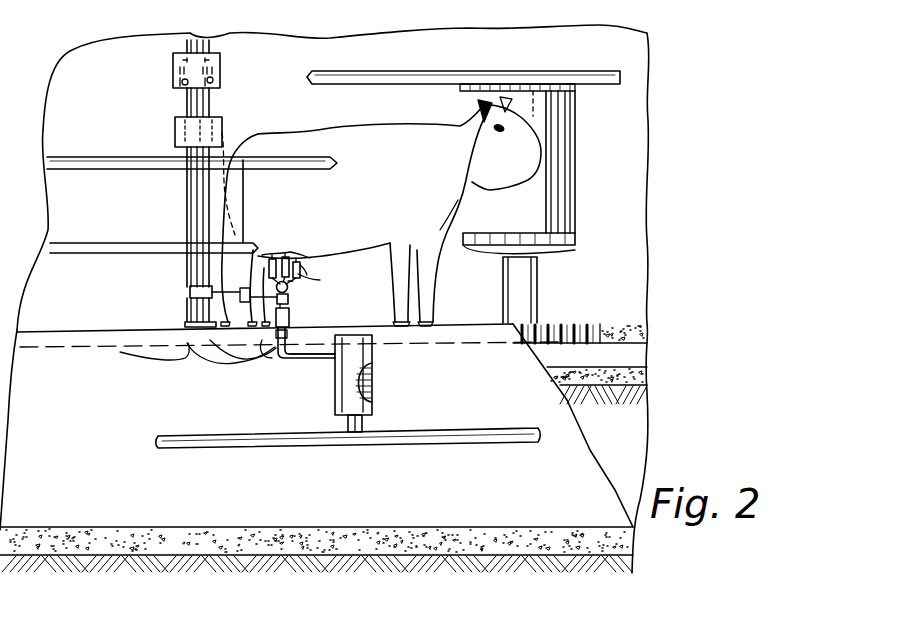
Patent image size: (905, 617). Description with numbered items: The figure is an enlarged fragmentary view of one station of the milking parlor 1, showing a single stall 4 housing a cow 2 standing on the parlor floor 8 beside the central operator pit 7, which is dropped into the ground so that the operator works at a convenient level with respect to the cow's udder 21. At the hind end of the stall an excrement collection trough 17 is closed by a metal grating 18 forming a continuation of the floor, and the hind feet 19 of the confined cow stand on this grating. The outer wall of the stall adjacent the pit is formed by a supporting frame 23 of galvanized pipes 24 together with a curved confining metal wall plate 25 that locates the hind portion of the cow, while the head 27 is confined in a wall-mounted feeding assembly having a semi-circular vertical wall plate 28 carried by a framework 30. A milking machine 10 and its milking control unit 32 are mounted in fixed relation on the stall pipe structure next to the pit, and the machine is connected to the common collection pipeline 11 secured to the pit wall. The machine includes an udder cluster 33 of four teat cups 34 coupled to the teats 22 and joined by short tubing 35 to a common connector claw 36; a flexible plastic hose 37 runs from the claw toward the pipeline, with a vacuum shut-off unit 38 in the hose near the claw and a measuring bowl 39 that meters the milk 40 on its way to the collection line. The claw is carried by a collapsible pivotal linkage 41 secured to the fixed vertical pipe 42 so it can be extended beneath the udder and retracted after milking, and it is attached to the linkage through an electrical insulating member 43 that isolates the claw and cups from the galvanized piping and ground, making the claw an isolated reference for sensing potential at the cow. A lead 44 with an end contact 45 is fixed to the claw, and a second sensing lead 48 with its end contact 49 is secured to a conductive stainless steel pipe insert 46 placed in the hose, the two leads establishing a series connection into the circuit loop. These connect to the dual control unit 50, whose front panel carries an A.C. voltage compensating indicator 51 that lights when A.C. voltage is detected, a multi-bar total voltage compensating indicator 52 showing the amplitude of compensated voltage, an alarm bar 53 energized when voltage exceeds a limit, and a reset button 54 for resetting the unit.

The milking parlor 1 is at (541, 247).
The cow 2 is at (354, 215).
The stall 4 is at (431, 160).
The operator pit 7 is at (316, 520).
The parlor floor 8 is at (633, 323).
The milking machine 10 is at (348, 282).
The collection pipeline 11 is at (433, 443).
The excrement collection trough 17 is at (630, 357).
The metal grating 18 is at (568, 323).
The hind feet 19 is at (236, 336).
The udder 21 is at (288, 245).
The teats 22 is at (300, 240).
The supporting frame 23 is at (117, 133).
The pipe 24 is at (193, 220).
The confining metal wall plate 25 is at (243, 186).
The head 27 is at (507, 137).
The semi-circular vertical wall plate 28 is at (562, 153).
The framework 30 is at (585, 77).
The milking control unit 32 is at (224, 118).
The udder cluster 33 is at (277, 250).
The teat cups 34 is at (297, 265).
The short tubing 35 is at (307, 274).
The connector claw 36 is at (293, 281).
The flexible hose 37 is at (310, 360).
The vacuum shut-off unit 38 is at (292, 303).
The measuring bowl 39 is at (372, 401).
The milk 40 is at (372, 372).
The pivotal linkage 41 is at (190, 312).
The fixed vertical pipe 42 is at (190, 291).
The electrical insulating member 43 is at (288, 298).
The lead 44 is at (210, 363).
The end contact 45 is at (255, 253).
The conductive pipe insert 46 is at (289, 338).
The second sensing lead 48 is at (186, 345).
The end contact 49 is at (280, 353).
The control unit 50 is at (210, 42).
The A.C. voltage compensating indicator 51 is at (185, 58).
The total voltage compensating indicator 52 is at (180, 72).
The alarm bar 53 is at (176, 84).
The reset button 54 is at (185, 86).